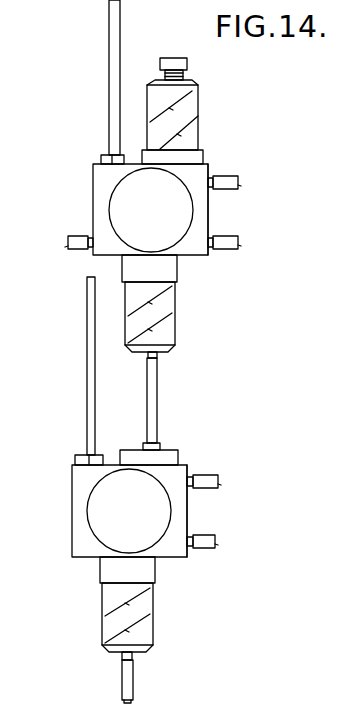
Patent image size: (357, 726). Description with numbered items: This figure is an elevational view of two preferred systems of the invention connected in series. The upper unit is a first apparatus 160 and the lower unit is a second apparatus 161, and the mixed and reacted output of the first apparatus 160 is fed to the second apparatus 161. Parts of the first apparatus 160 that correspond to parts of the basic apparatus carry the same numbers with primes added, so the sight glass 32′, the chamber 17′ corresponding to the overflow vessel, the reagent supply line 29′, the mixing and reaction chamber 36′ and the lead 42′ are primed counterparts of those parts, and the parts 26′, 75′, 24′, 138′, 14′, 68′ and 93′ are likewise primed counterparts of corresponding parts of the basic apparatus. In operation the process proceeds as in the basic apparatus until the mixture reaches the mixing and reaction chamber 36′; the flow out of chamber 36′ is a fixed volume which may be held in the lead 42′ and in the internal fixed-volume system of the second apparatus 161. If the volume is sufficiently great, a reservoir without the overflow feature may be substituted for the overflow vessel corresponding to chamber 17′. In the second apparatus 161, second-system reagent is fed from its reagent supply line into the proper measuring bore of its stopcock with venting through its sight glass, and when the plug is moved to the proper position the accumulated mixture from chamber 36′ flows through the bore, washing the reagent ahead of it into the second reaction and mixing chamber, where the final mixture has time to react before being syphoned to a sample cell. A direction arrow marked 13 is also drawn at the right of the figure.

The sight glass 32′ is at (108, 62).
The cap 26′ is at (174, 58).
The overflow chamber 17′ is at (198, 122).
The mounting plate 75′ is at (203, 152).
The first apparatus 160 is at (213, 165).
The port fitting 24′ is at (230, 178).
The bore 138′ is at (117, 192).
The inlet fitting 14′ is at (69, 237).
The valve body 68′ is at (208, 222).
The reagent supply line 29′ is at (228, 238).
The collar 93′ is at (178, 272).
The mixing and reaction chamber 36′ is at (176, 325).
The lead 42′ is at (157, 404).
The second apparatus 161 is at (190, 467).
The section line 13 is at (343, 203).